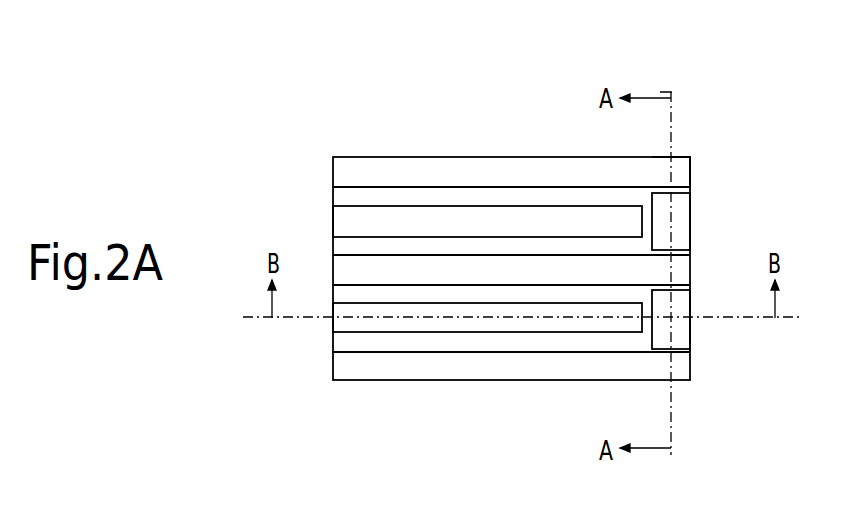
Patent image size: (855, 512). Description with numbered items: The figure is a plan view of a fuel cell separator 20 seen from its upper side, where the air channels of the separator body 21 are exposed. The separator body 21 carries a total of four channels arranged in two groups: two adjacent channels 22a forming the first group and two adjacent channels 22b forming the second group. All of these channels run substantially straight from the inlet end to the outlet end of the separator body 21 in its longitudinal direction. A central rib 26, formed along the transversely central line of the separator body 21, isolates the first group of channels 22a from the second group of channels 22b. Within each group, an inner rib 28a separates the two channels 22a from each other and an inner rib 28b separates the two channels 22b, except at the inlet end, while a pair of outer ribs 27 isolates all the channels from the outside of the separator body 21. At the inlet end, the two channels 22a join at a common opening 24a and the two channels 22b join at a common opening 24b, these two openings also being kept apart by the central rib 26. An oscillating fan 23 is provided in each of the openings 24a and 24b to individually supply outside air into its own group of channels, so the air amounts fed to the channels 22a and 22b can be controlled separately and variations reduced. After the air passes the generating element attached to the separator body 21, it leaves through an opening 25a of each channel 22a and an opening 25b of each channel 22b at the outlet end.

The separator 20 is at (318, 80).
The separator body 21 is at (406, 172).
The channels 22a is at (490, 247).
The channels 22b is at (463, 343).
The oscillating fan 23 is at (678, 224).
The common opening 24a is at (691, 192).
The common opening 24b is at (690, 350).
The opening 25a is at (340, 247).
The opening 25b is at (347, 344).
The central rib 26 is at (680, 270).
The outer ribs 27 is at (658, 175).
The inner rib 28a is at (562, 222).
The inner rib 28b is at (514, 325).